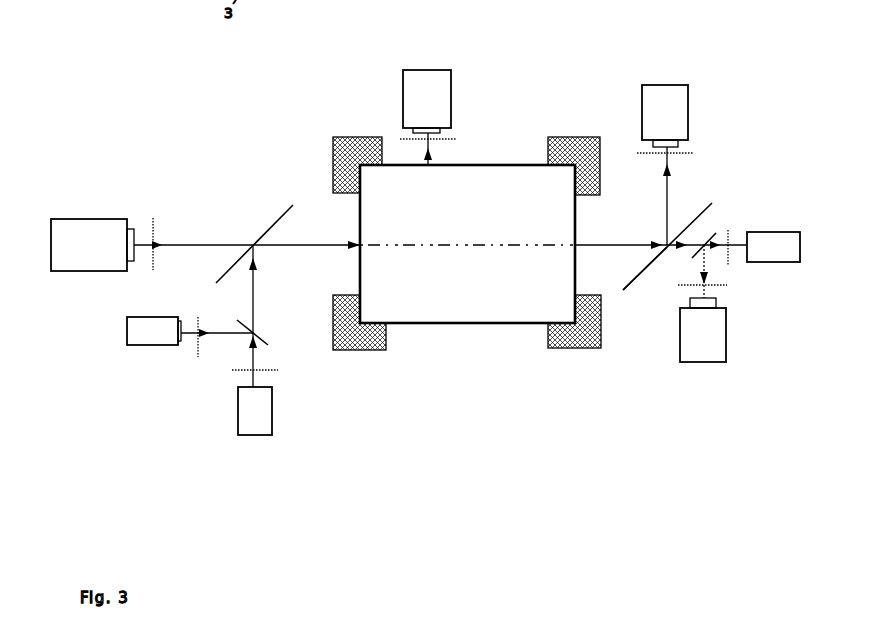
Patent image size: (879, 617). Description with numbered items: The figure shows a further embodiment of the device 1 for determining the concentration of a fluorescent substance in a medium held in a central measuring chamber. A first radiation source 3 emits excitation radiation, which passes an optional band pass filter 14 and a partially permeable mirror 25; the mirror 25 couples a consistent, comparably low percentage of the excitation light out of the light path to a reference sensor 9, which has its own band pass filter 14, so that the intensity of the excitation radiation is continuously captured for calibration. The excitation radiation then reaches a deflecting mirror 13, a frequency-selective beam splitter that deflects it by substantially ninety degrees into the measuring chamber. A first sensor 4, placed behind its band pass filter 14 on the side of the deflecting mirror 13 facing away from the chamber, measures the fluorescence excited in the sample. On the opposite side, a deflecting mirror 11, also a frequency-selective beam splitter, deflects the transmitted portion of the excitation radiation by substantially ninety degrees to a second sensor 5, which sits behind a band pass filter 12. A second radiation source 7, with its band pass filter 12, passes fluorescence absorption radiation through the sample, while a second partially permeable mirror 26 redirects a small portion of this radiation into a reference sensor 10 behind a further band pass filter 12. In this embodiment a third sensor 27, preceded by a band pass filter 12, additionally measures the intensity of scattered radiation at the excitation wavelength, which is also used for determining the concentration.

The device 1 is at (531, 98).
The first radiation source 3 is at (242, 451).
The first sensor 4 is at (42, 276).
The second sensor 5 is at (691, 80).
The second radiation source 7 is at (804, 273).
The reference sensor 9 is at (126, 356).
The reference sensor 10 is at (700, 367).
The deflecting mirror 11 is at (633, 291).
The band pass filter 12 is at (467, 143).
The deflecting mirror 13 is at (253, 228).
The band pass filter 14 is at (158, 231).
The partially permeable mirror 25 is at (260, 331).
The second partially permeable mirror 26 is at (719, 208).
The third sensor 27 is at (425, 70).